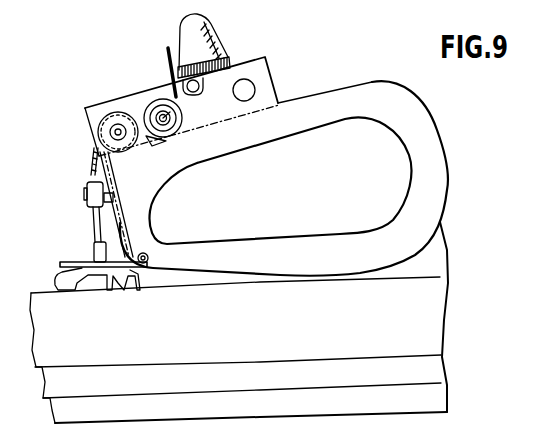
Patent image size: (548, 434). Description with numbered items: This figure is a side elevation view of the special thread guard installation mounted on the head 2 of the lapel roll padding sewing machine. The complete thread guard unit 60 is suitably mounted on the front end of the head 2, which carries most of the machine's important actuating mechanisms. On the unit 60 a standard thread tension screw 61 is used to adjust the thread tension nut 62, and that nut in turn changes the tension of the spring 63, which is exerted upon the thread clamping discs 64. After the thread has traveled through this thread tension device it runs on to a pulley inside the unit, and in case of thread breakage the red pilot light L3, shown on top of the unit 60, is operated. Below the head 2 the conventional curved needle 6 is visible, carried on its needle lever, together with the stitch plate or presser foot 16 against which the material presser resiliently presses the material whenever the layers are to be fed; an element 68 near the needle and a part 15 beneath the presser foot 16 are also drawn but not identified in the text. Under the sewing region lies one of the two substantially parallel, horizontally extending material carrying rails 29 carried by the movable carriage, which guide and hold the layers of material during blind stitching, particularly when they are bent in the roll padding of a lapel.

The sewing machine head 2 is at (327, 95).
The material carrying rail 29 is at (323, 340).
The thread guard unit 60 is at (257, 67).
The red pilot light L3 is at (178, 28).
The thread clamping disc 64 is at (153, 100).
The thread tension nut 62 is at (169, 138).
The thread tension screw 61 is at (167, 118).
The spring 63 is at (153, 146).
The spring 68 is at (92, 168).
The stitch plate or presser foot 16 is at (82, 263).
The curved needle 6 is at (93, 228).
The feet 15 is at (108, 290).